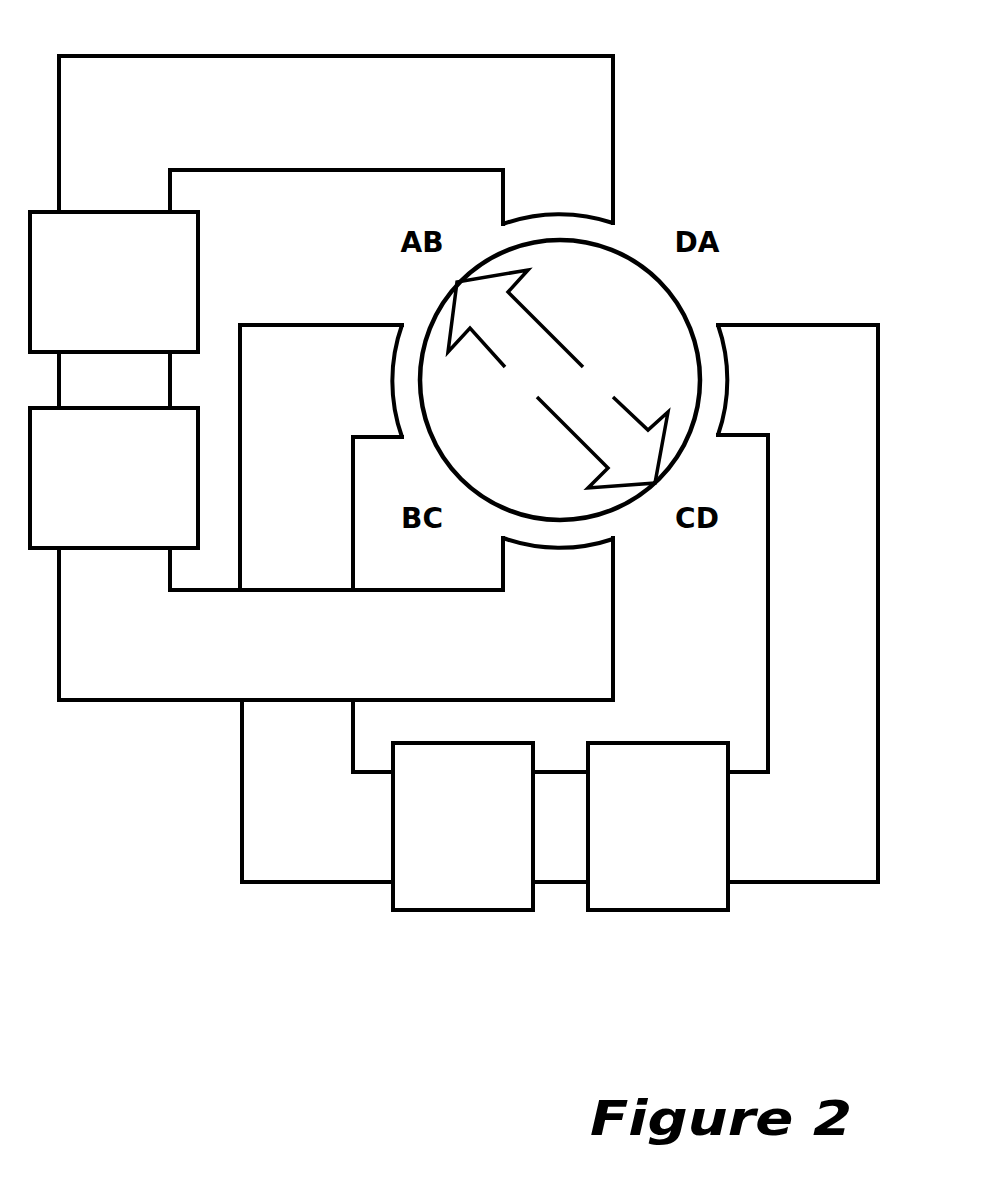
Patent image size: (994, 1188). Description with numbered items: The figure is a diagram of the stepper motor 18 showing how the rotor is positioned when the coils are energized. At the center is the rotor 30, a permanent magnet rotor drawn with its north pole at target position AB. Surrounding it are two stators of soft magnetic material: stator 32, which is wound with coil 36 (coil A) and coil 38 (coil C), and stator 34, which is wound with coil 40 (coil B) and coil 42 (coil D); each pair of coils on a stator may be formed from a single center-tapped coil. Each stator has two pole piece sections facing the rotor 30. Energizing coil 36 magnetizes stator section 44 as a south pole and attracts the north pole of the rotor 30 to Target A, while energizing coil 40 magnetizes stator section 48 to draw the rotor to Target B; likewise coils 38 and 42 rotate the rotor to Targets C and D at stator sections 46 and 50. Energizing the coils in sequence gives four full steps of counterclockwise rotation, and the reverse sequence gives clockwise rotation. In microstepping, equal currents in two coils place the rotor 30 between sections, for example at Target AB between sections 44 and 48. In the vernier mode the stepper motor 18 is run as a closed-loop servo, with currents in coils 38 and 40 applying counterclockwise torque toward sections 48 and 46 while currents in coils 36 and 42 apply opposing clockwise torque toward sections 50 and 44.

The stepper motor 18 is at (210, 928).
The rotor 30 is at (620, 250).
The stator 32 is at (146, 56).
The stator 34 is at (842, 882).
The coil 36 is at (198, 212).
The coil 38 is at (198, 408).
The coil 40 is at (497, 743).
The coil 42 is at (677, 743).
The stator section 44 is at (503, 222).
The stator section 46 is at (613, 538).
The stator section 48 is at (402, 437).
The stator section 50 is at (718, 325).